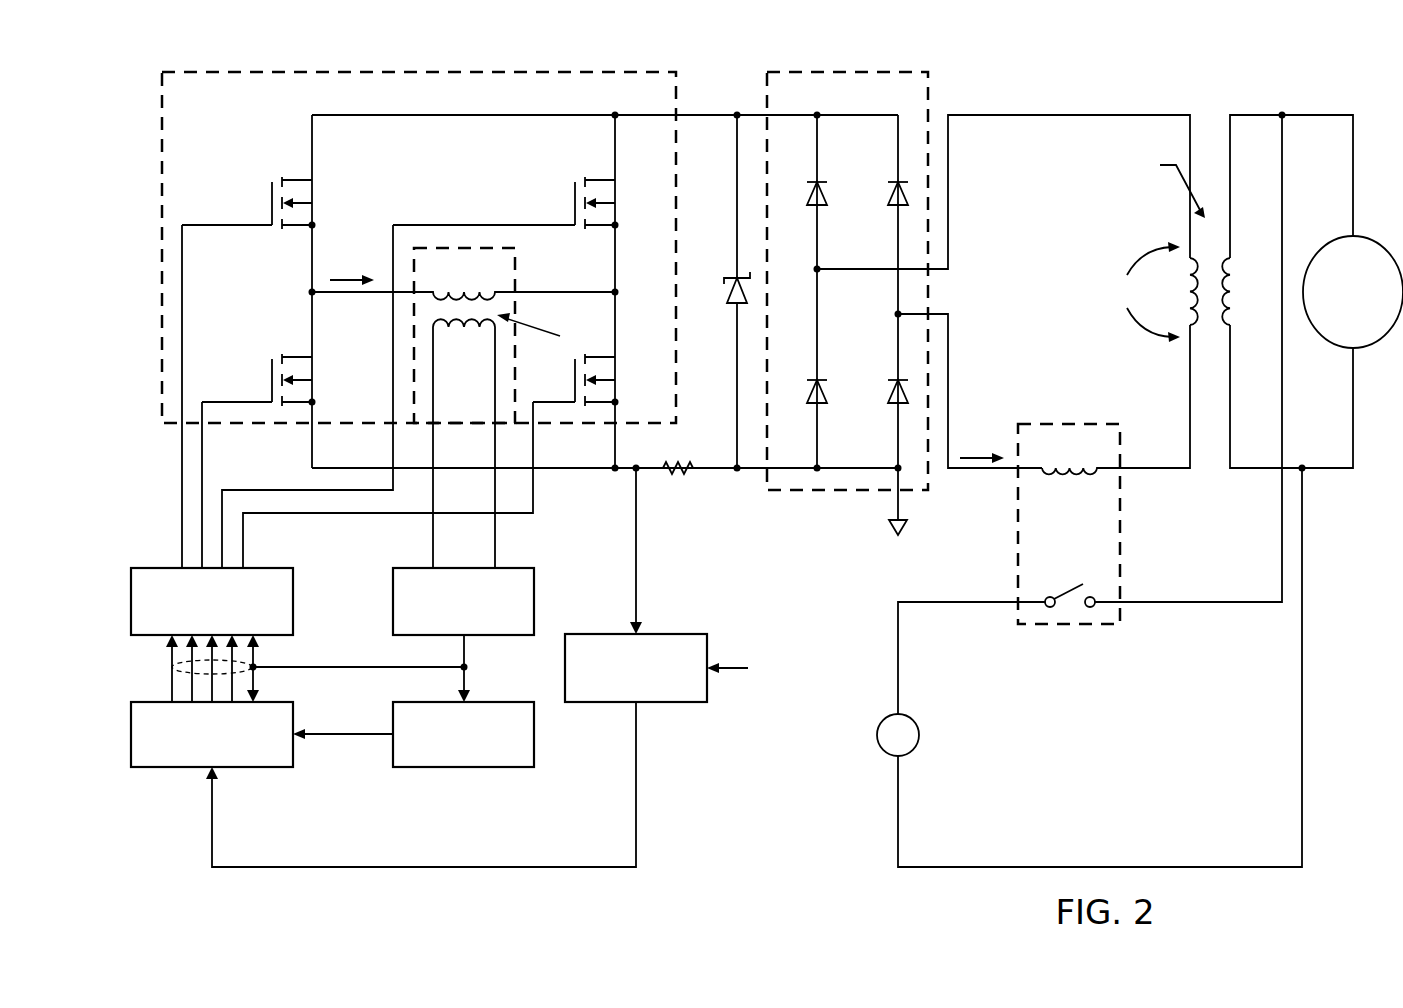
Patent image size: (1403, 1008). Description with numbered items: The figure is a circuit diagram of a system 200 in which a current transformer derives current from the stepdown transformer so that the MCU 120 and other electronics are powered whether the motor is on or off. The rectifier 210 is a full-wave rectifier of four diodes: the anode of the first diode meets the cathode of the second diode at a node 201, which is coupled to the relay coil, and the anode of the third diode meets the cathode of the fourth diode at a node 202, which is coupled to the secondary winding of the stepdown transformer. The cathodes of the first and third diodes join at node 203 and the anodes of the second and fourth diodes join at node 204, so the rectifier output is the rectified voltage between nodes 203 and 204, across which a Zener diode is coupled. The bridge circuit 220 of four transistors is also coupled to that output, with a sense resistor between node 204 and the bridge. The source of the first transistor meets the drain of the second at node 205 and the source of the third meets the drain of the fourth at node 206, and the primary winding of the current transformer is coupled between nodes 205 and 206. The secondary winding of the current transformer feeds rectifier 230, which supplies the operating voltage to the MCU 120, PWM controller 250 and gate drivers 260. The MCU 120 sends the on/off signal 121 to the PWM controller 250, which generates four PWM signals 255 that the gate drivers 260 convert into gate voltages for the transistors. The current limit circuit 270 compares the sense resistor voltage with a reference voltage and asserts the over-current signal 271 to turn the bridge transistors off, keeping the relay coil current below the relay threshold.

The system 200 is at (998, 64).
The bridge circuit 220 is at (380, 64).
The rectifier 210 is at (898, 64).
The node 201 is at (892, 318).
The node 202 is at (821, 267).
The node 203 is at (820, 118).
The node 204 is at (821, 465).
The node 205 is at (620, 290).
The node 206 is at (307, 290).
The gate drivers 260 is at (160, 566).
The PWM signals 255 is at (170, 662).
The PWM controller 250 is at (172, 770).
The rectifier 230 is at (500, 640).
The MCU 120 is at (455, 770).
The ON/OFF signal 121 is at (343, 740).
The current limit circuit 270 is at (607, 706).
The OVER_CURRENT signal 271 is at (430, 872).